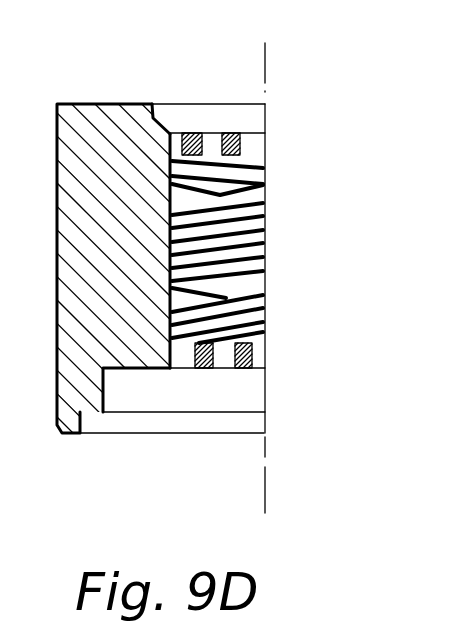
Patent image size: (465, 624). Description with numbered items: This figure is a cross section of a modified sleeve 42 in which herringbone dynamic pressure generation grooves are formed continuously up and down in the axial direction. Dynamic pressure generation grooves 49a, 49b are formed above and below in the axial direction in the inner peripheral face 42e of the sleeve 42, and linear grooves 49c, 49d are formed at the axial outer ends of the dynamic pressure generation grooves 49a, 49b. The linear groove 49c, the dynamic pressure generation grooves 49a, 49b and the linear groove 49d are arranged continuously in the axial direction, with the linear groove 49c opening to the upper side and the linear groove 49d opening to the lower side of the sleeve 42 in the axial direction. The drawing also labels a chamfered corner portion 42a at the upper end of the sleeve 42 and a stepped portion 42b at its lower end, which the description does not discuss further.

The sleeve 42 is at (76, 395).
The chamfered corner portion of member 42 42a is at (151, 102).
The step portion of member 42 42b is at (133, 369).
The inner peripheral face 42e is at (182, 369).
The dynamic pressure generation groove 49a is at (267, 186).
The dynamic pressure generation groove 49b is at (268, 292).
The linear groove 49c is at (267, 133).
The linear groove 49d is at (268, 358).